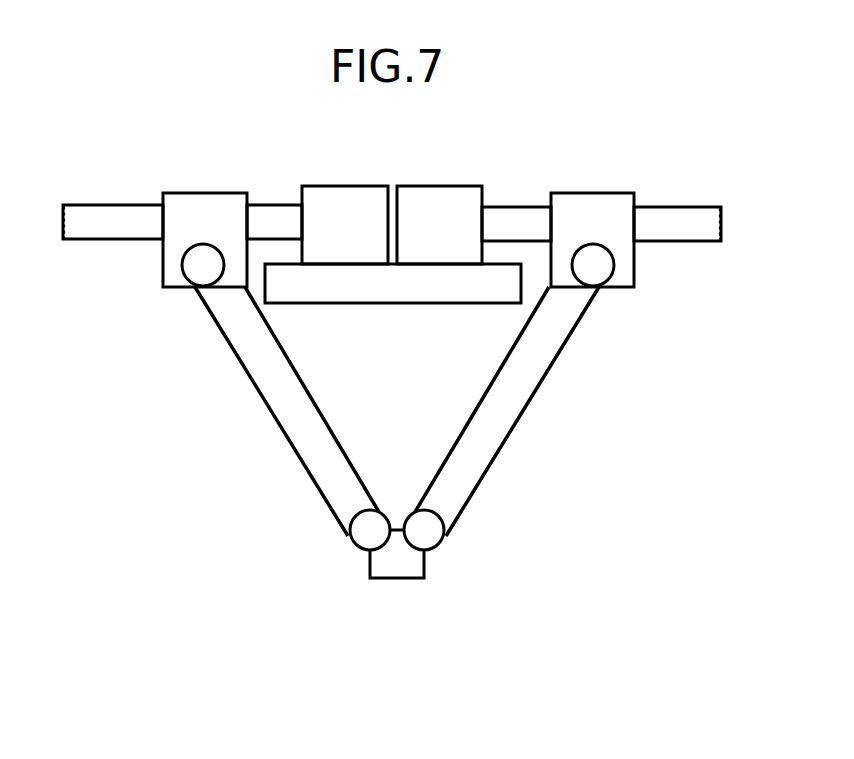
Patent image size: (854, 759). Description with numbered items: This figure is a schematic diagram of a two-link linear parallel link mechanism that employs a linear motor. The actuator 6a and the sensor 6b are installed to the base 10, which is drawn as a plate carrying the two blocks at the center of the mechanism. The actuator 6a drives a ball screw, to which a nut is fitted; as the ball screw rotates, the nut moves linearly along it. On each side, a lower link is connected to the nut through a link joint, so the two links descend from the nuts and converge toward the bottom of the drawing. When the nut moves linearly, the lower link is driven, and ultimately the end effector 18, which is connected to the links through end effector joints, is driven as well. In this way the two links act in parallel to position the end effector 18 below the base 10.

The actuator 6a is at (342, 186).
The sensor 6b is at (438, 186).
The base 10 is at (395, 304).
The end effector 18 is at (398, 579).